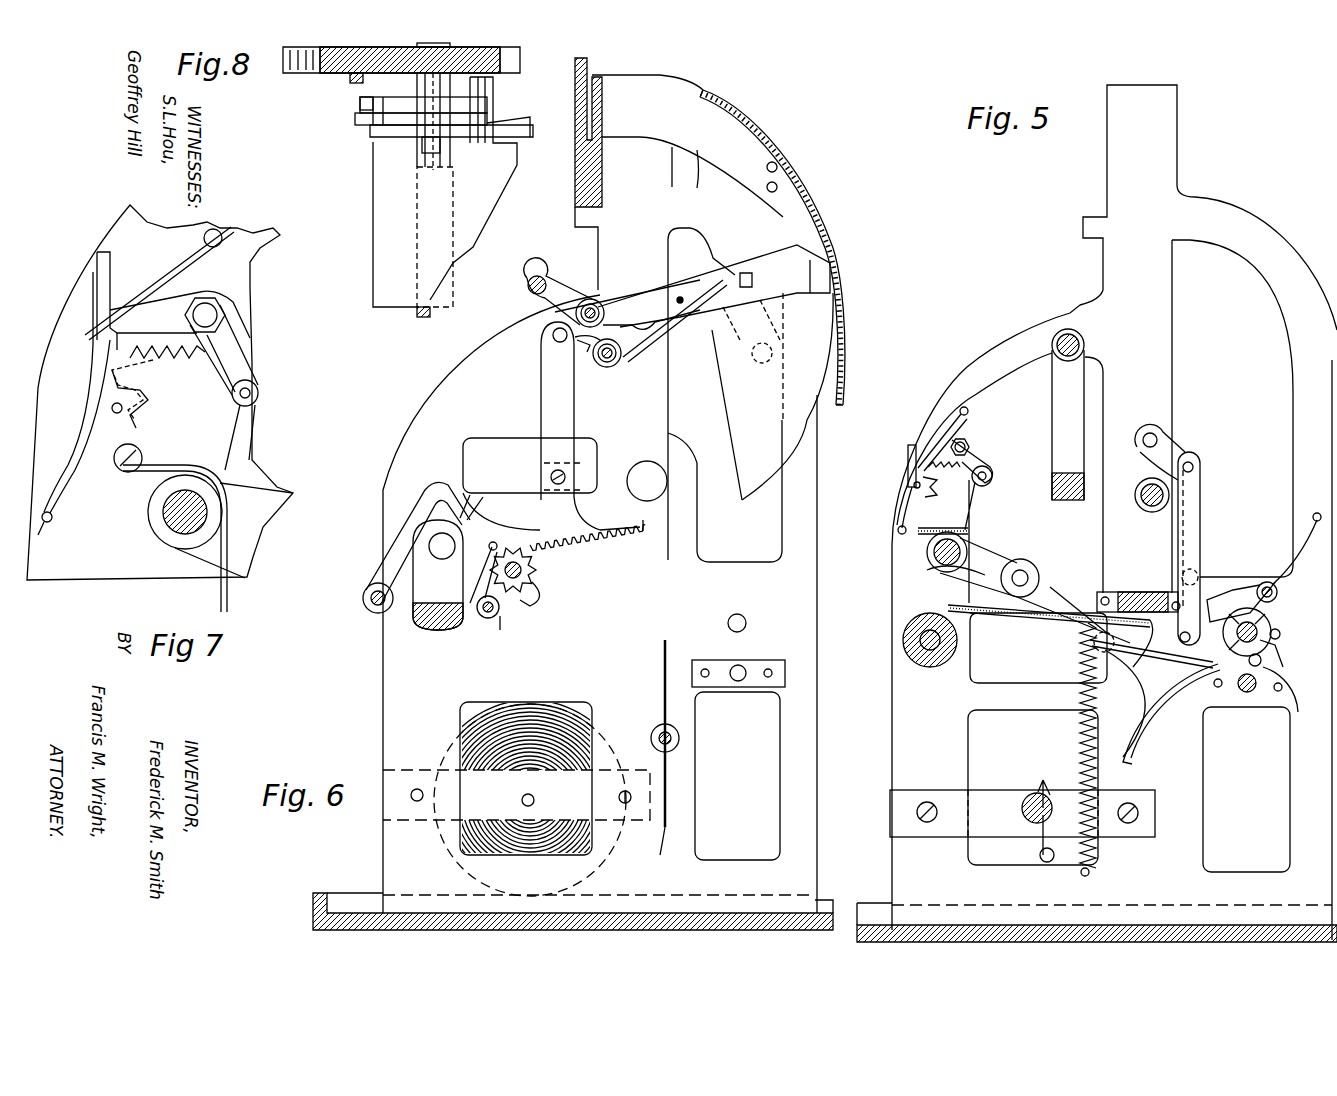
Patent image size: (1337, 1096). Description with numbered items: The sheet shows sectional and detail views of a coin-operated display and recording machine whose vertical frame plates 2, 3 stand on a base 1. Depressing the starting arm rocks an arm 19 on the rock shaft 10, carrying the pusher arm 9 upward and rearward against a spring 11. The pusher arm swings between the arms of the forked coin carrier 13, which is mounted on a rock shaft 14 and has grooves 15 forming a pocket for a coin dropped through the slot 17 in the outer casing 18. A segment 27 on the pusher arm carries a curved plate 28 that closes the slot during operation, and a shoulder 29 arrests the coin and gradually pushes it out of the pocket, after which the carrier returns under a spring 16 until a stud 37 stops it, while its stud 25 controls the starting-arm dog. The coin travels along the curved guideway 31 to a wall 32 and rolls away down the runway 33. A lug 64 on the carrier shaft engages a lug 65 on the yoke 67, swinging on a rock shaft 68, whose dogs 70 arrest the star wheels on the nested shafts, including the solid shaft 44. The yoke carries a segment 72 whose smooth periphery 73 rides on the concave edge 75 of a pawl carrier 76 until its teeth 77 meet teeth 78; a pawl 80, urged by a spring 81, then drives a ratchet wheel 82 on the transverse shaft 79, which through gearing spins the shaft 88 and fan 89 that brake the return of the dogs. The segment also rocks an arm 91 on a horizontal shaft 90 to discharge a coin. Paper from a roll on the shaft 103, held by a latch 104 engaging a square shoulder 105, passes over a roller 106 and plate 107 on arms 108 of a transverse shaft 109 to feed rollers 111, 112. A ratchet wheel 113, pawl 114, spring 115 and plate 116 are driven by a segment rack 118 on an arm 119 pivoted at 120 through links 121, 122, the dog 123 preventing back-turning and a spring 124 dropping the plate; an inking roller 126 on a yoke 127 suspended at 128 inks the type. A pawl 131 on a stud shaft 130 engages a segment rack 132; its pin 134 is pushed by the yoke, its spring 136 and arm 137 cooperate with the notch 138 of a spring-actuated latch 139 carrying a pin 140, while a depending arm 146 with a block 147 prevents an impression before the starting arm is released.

In FIG. 6, the base 1 is at (345, 900).
In FIG. 5, the base 1 is at (866, 905).
In FIG. 8, the frame plate 2 is at (300, 70).
In FIG. 7, the frame plate 2 is at (240, 272).
In FIG. 5, the frame plate 2 is at (1222, 210).
In FIG. 6, the frame plate 3 is at (455, 393).
In FIG. 6, the pusher arm 9 is at (632, 305).
In FIG. 6, the rock shaft 10 is at (588, 298).
In FIG. 6, the spring 11 is at (554, 296).
In FIG. 6, the forked coin carrier 13 is at (695, 335).
In FIG. 6, the rock shaft 14 is at (607, 370).
In FIG. 6, the grooves 15 is at (785, 262).
In FIG. 6, the spring 16 is at (653, 345).
In FIG. 6, the slot 17 is at (807, 258).
In FIG. 6, the outer casing 18 is at (818, 195).
In FIG. 6, the arm 19 is at (545, 282).
In FIG. 6, the stud 25 is at (680, 300).
In FIG. 6, the segment 27 is at (742, 417).
In FIG. 6, the curved plate 28 is at (855, 350).
In FIG. 6, the shoulder 29 is at (742, 273).
In FIG. 6, the curved guideway 31 is at (740, 120).
In FIG. 6, the wall 32 is at (577, 93).
In FIG. 8, the runway 33 is at (532, 120).
In FIG. 6, the stud 37 is at (807, 303).
In FIG. 5, the innermost shaft 44 is at (1145, 488).
In FIG. 6, the lug 64 is at (552, 337).
In FIG. 6, the lug 65 is at (590, 350).
In FIG. 6, the yoke 67 is at (541, 420).
In FIG. 5, the yoke 67 is at (1085, 498).
In FIG. 6, the rock shaft 68 is at (555, 332).
In FIG. 5, the rock shaft 68 is at (1082, 347).
In FIG. 6, the dogs 70 is at (578, 487).
In FIG. 6, the segment 72 is at (514, 514).
In FIG. 6, the smooth convex periphery 73 is at (478, 525).
In FIG. 6, the concave edge 75 is at (508, 540).
In FIG. 6, the pawl carrier 76 is at (507, 627).
In FIG. 6, the teeth 77 is at (608, 548).
In FIG. 6, the teeth 78 is at (537, 593).
In FIG. 6, the transverse shaft 79 is at (512, 594).
In FIG. 6, the pawl 80 is at (488, 618).
In FIG. 6, the spring 81 is at (472, 615).
In FIG. 6, the ratchet wheel 82 is at (532, 570).
In FIG. 6, the shaft 88 is at (660, 735).
In FIG. 6, the fan 89 is at (654, 761).
In FIG. 6, the horizontal shaft 90 is at (372, 605).
In FIG. 6, the arm 91 is at (418, 513).
In FIG. 6, the shaft 103 is at (536, 800).
In FIG. 5, the latch 104 is at (1043, 780).
In FIG. 5, the square shoulder 105 is at (1030, 800).
In FIG. 5, the roller 106 is at (905, 655).
In FIG. 5, the plate 107 is at (1065, 622).
In FIG. 8, the arms 108 is at (520, 143).
In FIG. 7, the arms 108 is at (238, 553).
In FIG. 5, the arms 108 is at (975, 578).
In FIG. 8, the transverse shaft 109 is at (417, 303).
In FIG. 7, the transverse shaft 109 is at (172, 530).
In FIG. 6, the transverse shaft 109 is at (440, 547).
In FIG. 5, the transverse shaft 109 is at (933, 553).
In FIG. 6, the lower feed roller 111 is at (736, 684).
In FIG. 5, the lower feed roller 111 is at (1246, 693).
In FIG. 6, the upper feed roller 112 is at (746, 620).
In FIG. 5, the upper feed roller 112 is at (1262, 630).
In FIG. 5, the ratchet wheel 113 is at (1280, 636).
In FIG. 5, the pawl 114 is at (1258, 670).
In FIG. 5, the spring 115 is at (1287, 688).
In FIG. 5, the plate 116 is at (1268, 656).
In FIG. 5, the segment rack 118 is at (1171, 714).
In FIG. 5, the arm 119 is at (1085, 635).
In FIG. 5, the pivot 120 is at (1024, 572).
In FIG. 5, the link 121 is at (1108, 656).
In FIG. 5, the link 122 is at (1196, 562).
In FIG. 5, the spring actuated dog 123 is at (1264, 567).
In FIG. 5, the spring 124 is at (1080, 705).
In FIG. 5, the inking roller 126 is at (1108, 604).
In FIG. 5, the yoke 127 is at (1174, 600).
In FIG. 5, the suspension 128 is at (1158, 440).
In FIG. 8, the stud shaft 130 is at (428, 150).
In FIG. 7, the stud shaft 130 is at (215, 313).
In FIG. 5, the stud shaft 130 is at (968, 445).
In FIG. 8, the pawl 131 is at (375, 135).
In FIG. 7, the pawl 131 is at (240, 365).
In FIG. 5, the pawl 131 is at (980, 462).
In FIG. 8, the segment rack 132 is at (372, 105).
In FIG. 7, the segment rack 132 is at (210, 437).
In FIG. 5, the segment rack 132 is at (945, 472).
In FIG. 8, the pin 134 is at (487, 177).
In FIG. 7, the pin 134 is at (250, 393).
In FIG. 5, the pin 134 is at (990, 476).
In FIG. 7, the spring 136 is at (228, 233).
In FIG. 5, the spring 136 is at (958, 412).
In FIG. 7, the arm 137 is at (145, 325).
In FIG. 5, the arm 137 is at (938, 458).
In FIG. 8, the notch 138 is at (372, 87).
In FIG. 7, the notch 138 is at (100, 362).
In FIG. 5, the notch 138 is at (905, 455).
In FIG. 7, the spring-actuated latch 139 is at (110, 430).
In FIG. 5, the spring-actuated latch 139 is at (913, 500).
In FIG. 7, the pin 140 is at (110, 408).
In FIG. 5, the pin 140 is at (912, 487).
In FIG. 6, the depending arm 146 is at (435, 588).
In FIG. 6, the block 147 is at (416, 676).